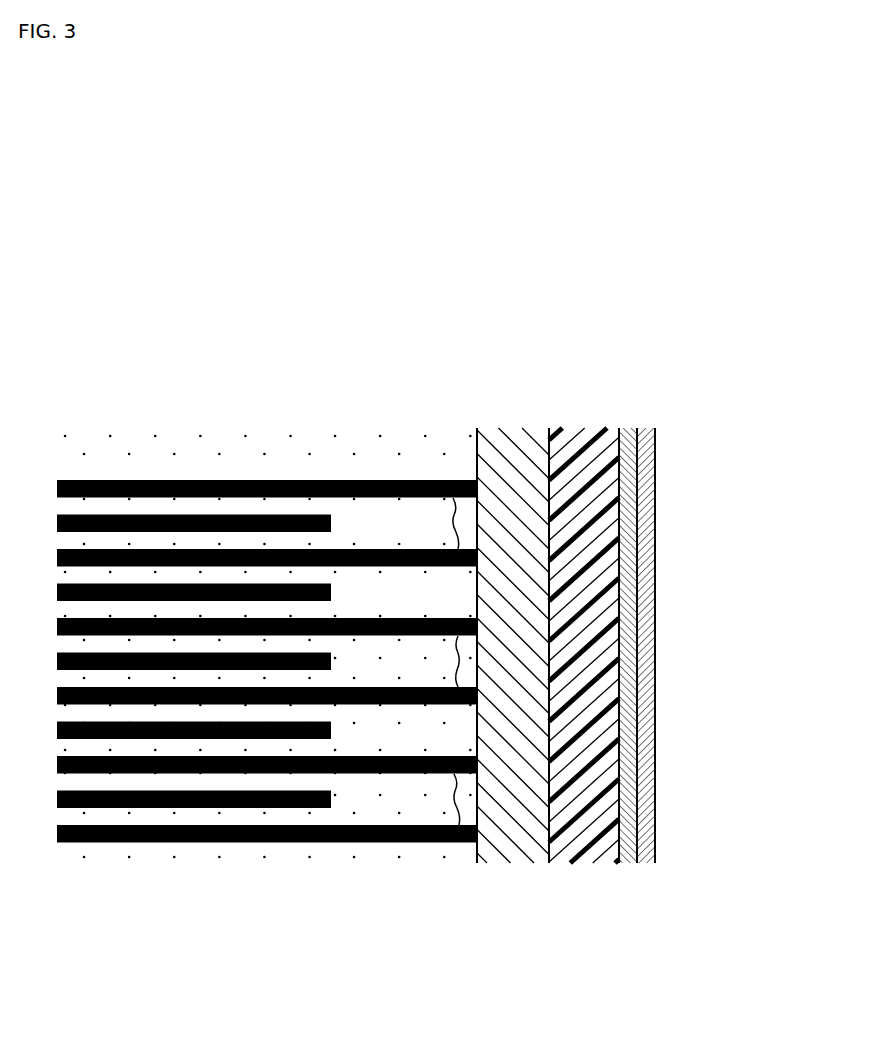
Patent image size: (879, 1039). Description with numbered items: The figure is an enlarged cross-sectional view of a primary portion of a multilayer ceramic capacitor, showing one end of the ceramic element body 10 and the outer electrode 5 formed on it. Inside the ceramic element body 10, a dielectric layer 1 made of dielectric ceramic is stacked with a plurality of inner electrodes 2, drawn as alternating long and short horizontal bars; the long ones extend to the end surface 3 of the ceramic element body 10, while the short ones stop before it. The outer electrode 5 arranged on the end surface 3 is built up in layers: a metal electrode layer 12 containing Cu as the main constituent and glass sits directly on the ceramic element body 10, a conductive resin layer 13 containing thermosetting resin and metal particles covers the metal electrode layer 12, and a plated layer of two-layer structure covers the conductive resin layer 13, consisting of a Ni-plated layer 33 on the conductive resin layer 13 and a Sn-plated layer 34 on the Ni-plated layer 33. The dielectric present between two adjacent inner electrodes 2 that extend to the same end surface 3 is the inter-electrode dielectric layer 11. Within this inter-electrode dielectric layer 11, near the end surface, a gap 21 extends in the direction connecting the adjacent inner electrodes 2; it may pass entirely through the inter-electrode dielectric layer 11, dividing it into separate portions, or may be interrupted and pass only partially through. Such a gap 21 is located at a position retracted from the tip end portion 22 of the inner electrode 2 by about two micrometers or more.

The ceramic element body 10 is at (266, 579).
The dielectric layer 1 is at (138, 582).
The inter-electrode dielectric layer 11 is at (397, 597).
The inner electrode 2 is at (138, 668).
The gap in a direction connecting the inner electrodes 21 is at (456, 520).
The end surface 3 is at (642, 645).
The metal electrode layer 12 is at (551, 573).
The tip end portion 22 is at (552, 638).
The Ni-plated layer 33 is at (716, 645).
The conductive resin layer 13 is at (620, 743).
The Sn-plated layer 34 is at (656, 843).
The outer electrode 5 is at (645, 721).